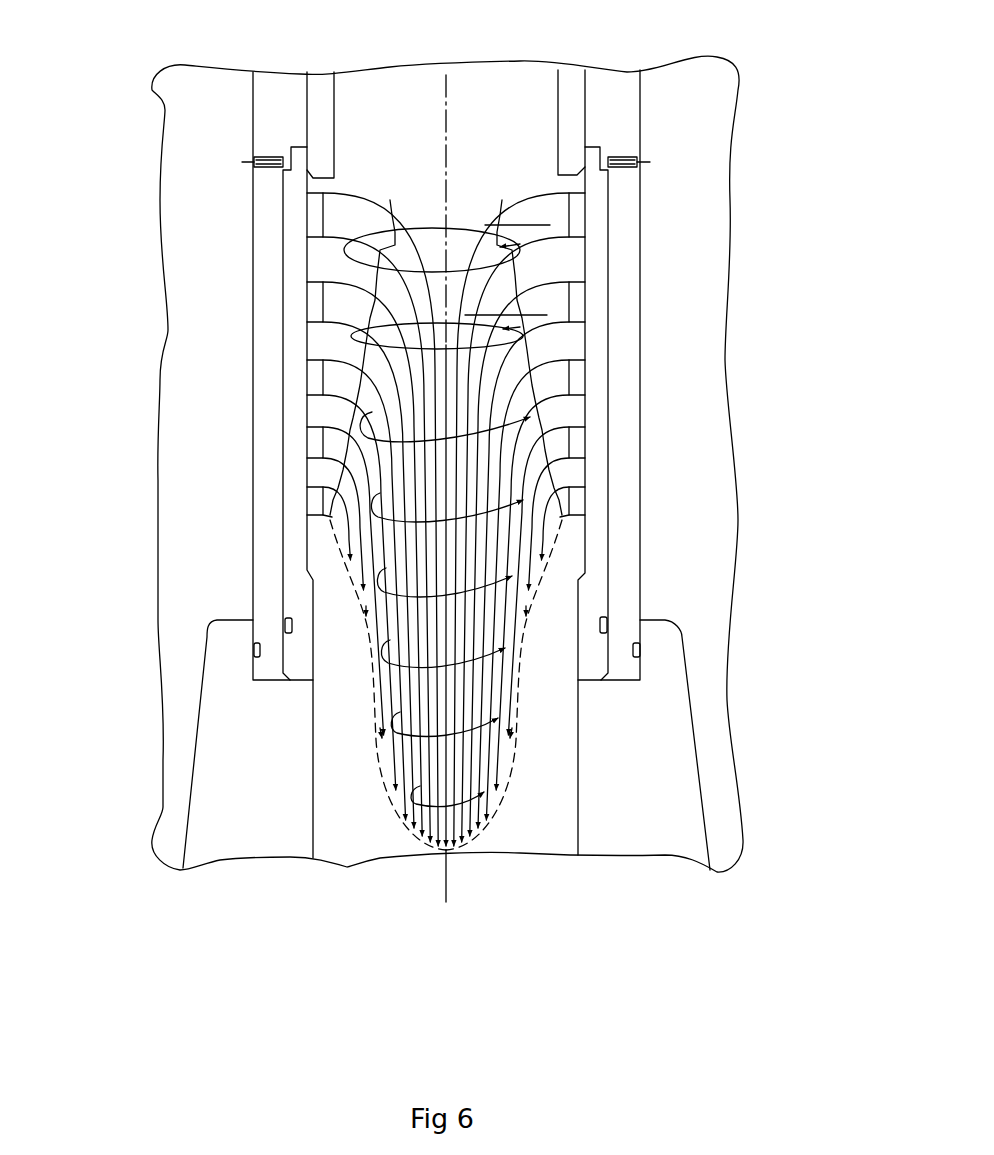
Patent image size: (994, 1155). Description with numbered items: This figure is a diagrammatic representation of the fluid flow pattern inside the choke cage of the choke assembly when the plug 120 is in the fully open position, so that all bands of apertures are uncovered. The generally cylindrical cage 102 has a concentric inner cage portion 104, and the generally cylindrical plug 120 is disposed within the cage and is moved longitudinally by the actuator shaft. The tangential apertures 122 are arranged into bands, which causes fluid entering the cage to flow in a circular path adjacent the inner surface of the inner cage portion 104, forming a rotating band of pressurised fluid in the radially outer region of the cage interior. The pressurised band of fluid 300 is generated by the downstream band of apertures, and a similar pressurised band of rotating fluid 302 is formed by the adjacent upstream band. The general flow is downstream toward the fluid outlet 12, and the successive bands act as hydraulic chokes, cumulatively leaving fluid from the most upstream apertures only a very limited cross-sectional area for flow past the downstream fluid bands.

The fluid outlet 12 is at (563, 810).
The cage 102 is at (592, 295).
The inner cage portion 104 is at (620, 522).
The plug 120 is at (565, 100).
The tangential apertures 122 is at (313, 375).
The pressurised band of fluid 300 is at (323, 502).
The pressurised band of rotating fluid 302 is at (317, 442).